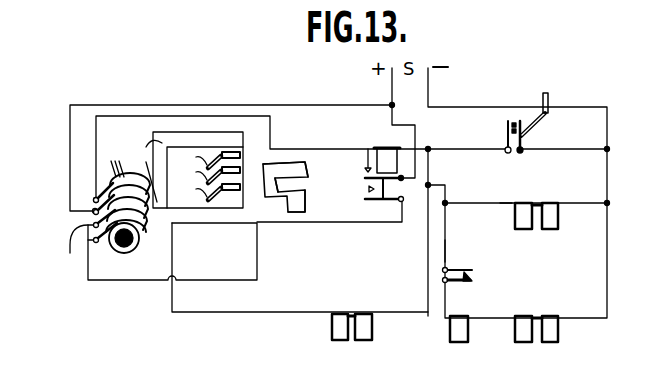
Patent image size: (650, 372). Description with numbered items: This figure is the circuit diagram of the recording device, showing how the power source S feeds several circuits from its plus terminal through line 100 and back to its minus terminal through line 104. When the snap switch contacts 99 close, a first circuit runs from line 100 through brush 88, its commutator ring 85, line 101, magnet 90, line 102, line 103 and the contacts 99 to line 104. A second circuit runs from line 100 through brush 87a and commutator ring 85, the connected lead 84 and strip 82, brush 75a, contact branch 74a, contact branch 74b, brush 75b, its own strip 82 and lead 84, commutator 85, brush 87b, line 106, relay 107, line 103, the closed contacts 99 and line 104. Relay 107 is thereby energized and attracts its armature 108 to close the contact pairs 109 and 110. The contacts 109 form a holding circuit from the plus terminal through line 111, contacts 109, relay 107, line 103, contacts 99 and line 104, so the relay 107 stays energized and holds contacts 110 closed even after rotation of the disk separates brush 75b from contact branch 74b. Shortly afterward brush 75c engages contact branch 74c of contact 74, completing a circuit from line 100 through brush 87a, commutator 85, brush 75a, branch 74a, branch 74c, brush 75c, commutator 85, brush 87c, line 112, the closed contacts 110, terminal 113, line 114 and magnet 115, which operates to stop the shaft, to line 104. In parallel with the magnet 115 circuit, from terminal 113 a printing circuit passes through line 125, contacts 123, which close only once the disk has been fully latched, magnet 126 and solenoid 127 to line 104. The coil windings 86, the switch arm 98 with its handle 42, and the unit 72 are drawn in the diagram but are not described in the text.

The line 100 is at (283, 106).
The line 101 is at (268, 313).
The line 102 is at (428, 237).
The line 103 is at (466, 150).
The line 104 is at (607, 138).
The line 106 is at (306, 148).
The relay 107 is at (390, 148).
The armature 108 is at (398, 173).
The contacts 109 is at (366, 167).
The contacts 110 is at (370, 192).
The line 111 is at (393, 122).
The line 112 is at (257, 250).
The terminal 113 is at (446, 203).
The line 114 is at (505, 203).
The magnet 115 is at (551, 214).
The contacts 123 is at (473, 277).
The line 125 is at (447, 250).
The magnet 126 is at (466, 330).
The solenoid 127 is at (558, 333).
The magnet 90 is at (333, 332).
The snap switch contacts 99 is at (511, 124).
The switch arm 98 is at (534, 126).
The switch handle 42 is at (549, 93).
The strip 82 is at (241, 187).
The brush 75a is at (207, 160).
The brush 75b is at (207, 175).
The brush 75c is at (207, 192).
The contact 74 is at (277, 195).
The contact branch 74a is at (308, 173).
The contact branch 74b is at (276, 181).
The contact branch 74c is at (300, 205).
The lead 84 is at (146, 171).
The commutator ring 85 is at (112, 160).
The solenoid coil 86 is at (150, 217).
The brush 87a is at (92, 200).
The brush 87b is at (94, 197).
The brush 87c is at (92, 238).
The brush 88 is at (112, 250).
The control unit 72 is at (649, 173).